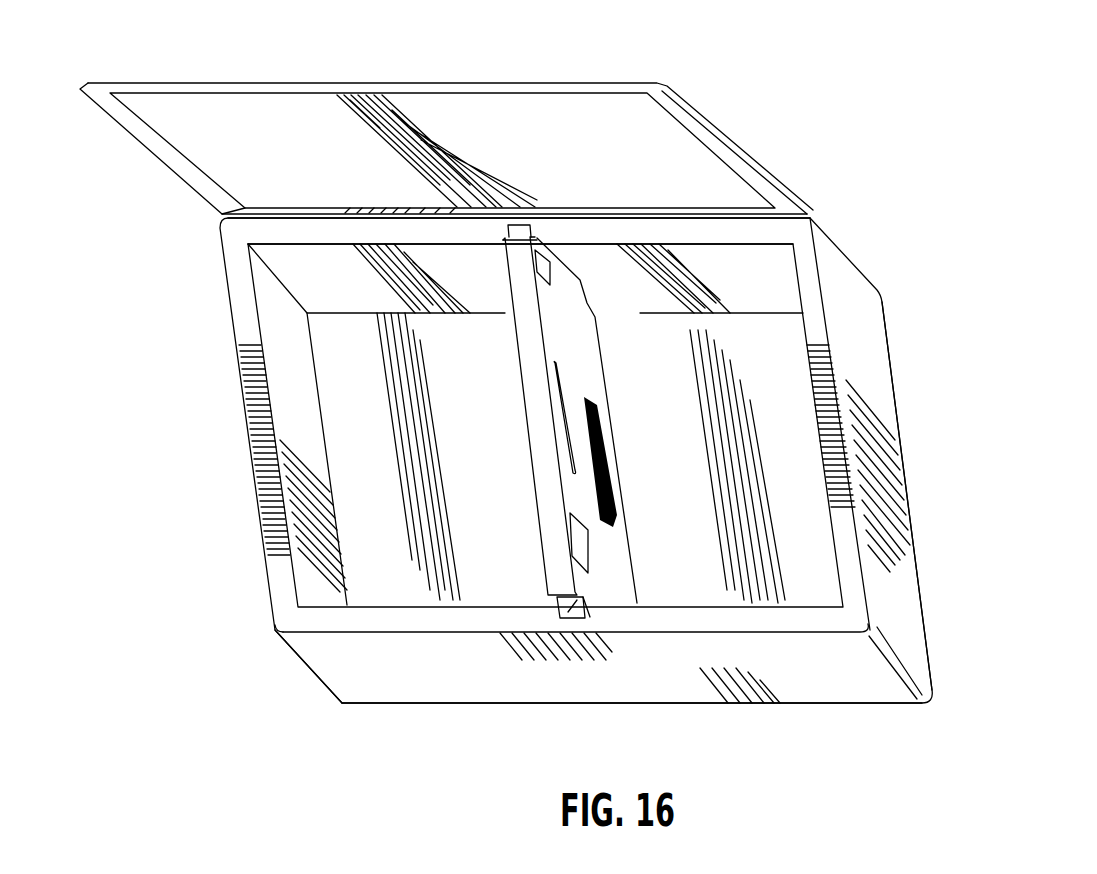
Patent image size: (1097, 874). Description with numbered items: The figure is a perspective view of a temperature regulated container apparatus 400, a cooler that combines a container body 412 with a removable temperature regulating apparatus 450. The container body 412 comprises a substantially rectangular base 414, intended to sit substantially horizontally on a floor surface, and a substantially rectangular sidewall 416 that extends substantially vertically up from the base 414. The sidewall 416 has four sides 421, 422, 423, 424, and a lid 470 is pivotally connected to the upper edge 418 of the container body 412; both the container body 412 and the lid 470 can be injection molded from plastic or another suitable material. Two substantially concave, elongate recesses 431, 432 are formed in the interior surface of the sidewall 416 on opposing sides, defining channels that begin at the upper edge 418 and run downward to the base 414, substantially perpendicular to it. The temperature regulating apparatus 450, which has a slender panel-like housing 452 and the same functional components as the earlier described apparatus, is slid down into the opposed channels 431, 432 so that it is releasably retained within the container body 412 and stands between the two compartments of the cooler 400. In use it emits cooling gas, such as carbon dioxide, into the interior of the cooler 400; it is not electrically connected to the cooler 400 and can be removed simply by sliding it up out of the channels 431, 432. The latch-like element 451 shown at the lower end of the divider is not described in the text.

The temperature regulated container apparatus 400 is at (130, 318).
The container body 412 is at (235, 412).
The base 414 is at (760, 355).
The sidewall 416 is at (295, 622).
The upper edge 418 is at (409, 232).
The side 421 is at (770, 688).
The side 422 is at (357, 270).
The side 423 is at (313, 447).
The side 424 is at (878, 398).
The recess 431 is at (590, 617).
The recess 432 is at (537, 240).
The temperature regulating apparatus 450 is at (545, 548).
The latch 451 is at (568, 612).
The housing 452 is at (558, 270).
The lid 470 is at (637, 135).